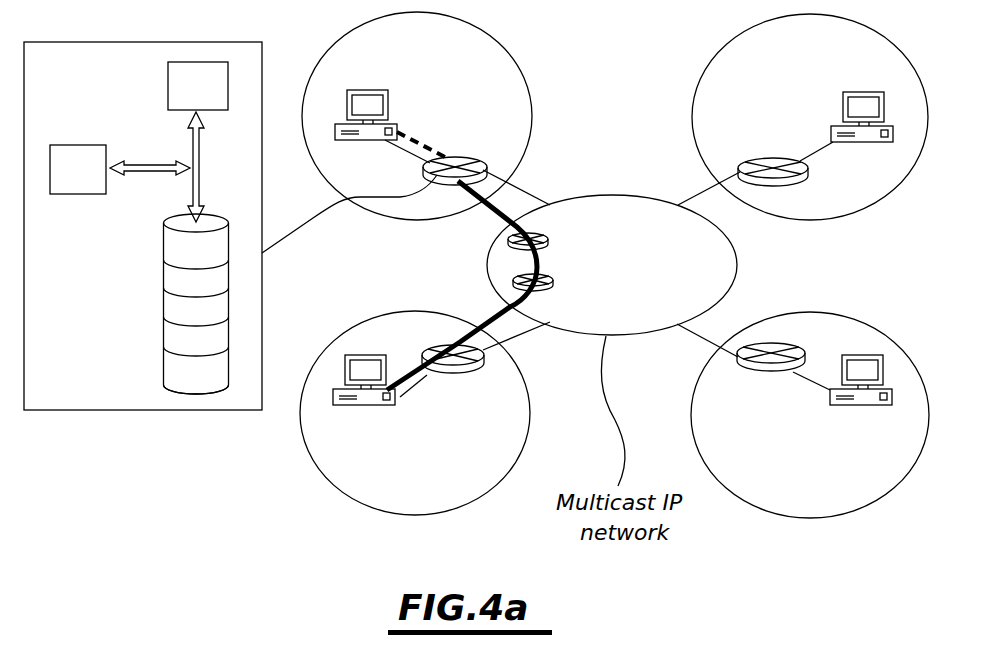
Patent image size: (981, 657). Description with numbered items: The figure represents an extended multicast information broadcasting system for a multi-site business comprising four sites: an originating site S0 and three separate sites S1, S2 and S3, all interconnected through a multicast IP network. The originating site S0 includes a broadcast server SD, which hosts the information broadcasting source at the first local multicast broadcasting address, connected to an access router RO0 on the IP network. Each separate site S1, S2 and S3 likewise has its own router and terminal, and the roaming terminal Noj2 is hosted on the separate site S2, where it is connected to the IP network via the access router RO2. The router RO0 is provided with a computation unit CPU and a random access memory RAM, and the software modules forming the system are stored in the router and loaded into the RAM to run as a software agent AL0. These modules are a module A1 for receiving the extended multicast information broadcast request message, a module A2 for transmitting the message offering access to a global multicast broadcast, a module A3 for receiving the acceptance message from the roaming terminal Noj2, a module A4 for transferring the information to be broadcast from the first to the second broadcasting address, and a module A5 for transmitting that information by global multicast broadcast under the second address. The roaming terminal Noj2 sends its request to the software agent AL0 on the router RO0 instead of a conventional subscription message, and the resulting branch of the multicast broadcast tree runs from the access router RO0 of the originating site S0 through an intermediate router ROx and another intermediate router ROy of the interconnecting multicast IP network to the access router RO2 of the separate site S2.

The software agent AL0 is at (143, 267).
The computation unit CPU is at (198, 86).
The random access memory RAM is at (78, 169).
The module for receiving an extended multicast information broadcast request message A1 is at (182, 252).
The module for transmitting the message offering access A2 is at (182, 280).
The module for receiving the acceptance message A3 is at (182, 309).
The module for transferring the information to be broadcast A4 is at (182, 339).
The module for transmitting by global multicast information broadcast A5 is at (182, 372).
The originating site S0 is at (417, 116).
The separate site S1 is at (810, 117).
The separate site S2 is at (415, 413).
The separate site S3 is at (810, 415).
The broadcast server SD is at (366, 129).
The router RO0 is at (462, 156).
The intermediate router ROx is at (507, 241).
The intermediate router ROy is at (513, 283).
The router RO2 is at (473, 375).
The roaming terminal Noj2 is at (366, 408).